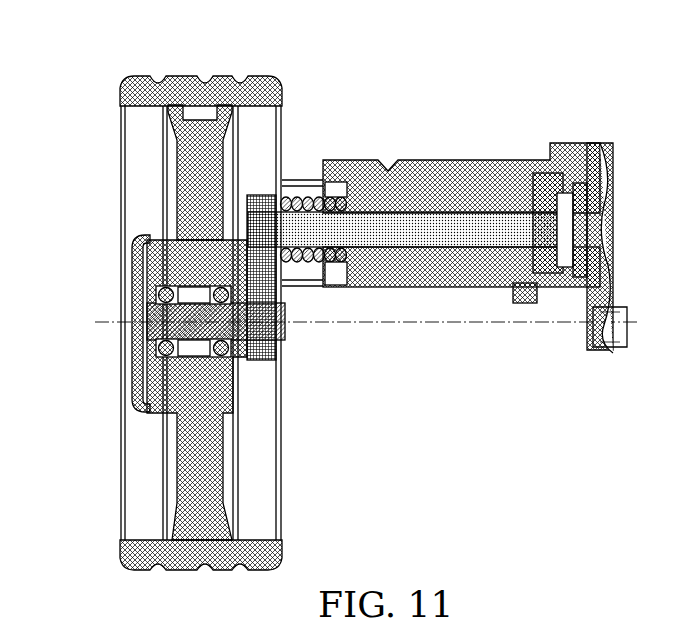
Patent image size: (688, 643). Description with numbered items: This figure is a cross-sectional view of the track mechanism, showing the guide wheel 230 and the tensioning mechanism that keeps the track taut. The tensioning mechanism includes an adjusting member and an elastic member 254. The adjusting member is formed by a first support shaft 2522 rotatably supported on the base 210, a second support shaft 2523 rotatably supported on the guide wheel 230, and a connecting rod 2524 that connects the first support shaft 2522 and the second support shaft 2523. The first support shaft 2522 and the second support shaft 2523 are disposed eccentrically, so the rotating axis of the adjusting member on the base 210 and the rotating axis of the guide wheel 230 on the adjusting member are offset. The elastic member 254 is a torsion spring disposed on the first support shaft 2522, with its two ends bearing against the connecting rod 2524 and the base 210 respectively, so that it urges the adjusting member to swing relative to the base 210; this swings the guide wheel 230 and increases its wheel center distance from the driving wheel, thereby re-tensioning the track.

The guide wheel 230 is at (186, 74).
The elastic member 254 is at (297, 190).
The base 210 is at (491, 163).
The second support shaft 2523 is at (128, 300).
The first support shaft 2522 is at (330, 265).
The connecting rod 2524 is at (272, 350).